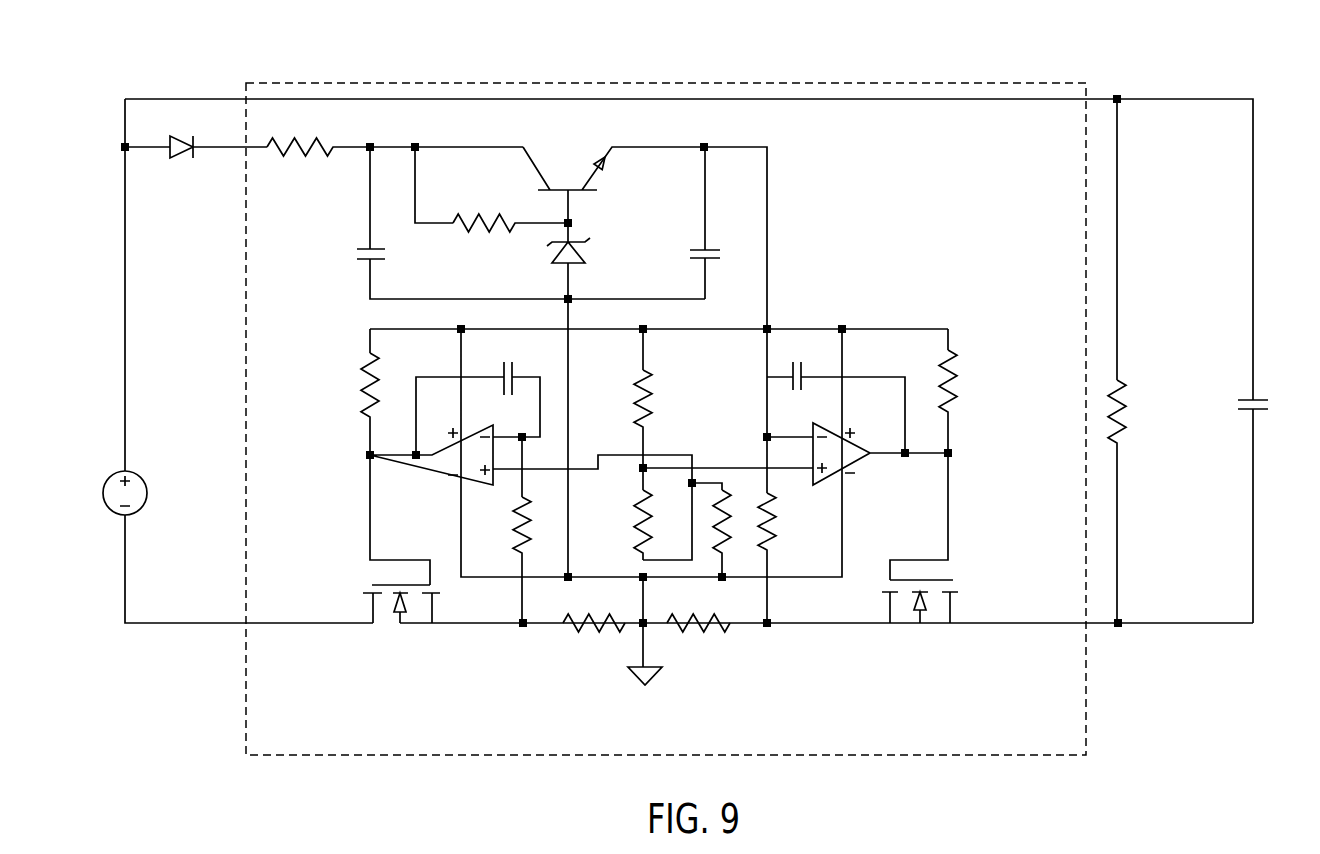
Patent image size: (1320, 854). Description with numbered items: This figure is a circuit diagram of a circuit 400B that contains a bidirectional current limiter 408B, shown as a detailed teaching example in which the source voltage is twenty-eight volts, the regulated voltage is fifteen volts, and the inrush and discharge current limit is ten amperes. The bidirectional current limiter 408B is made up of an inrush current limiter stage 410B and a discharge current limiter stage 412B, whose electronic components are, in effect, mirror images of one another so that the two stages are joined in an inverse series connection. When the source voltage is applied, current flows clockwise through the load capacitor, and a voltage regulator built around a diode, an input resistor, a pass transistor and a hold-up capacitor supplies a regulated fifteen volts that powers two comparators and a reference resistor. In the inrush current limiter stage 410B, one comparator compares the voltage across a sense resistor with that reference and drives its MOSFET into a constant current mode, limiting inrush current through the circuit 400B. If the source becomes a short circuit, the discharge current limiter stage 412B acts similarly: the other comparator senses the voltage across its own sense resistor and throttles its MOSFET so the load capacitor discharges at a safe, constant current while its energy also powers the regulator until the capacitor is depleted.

The circuit 400B is at (1270, 115).
The bidirectional current limiter 408B is at (338, 330).
The inrush current limiter stage 410B is at (810, 650).
The discharge current limiter stage 412B is at (492, 650).